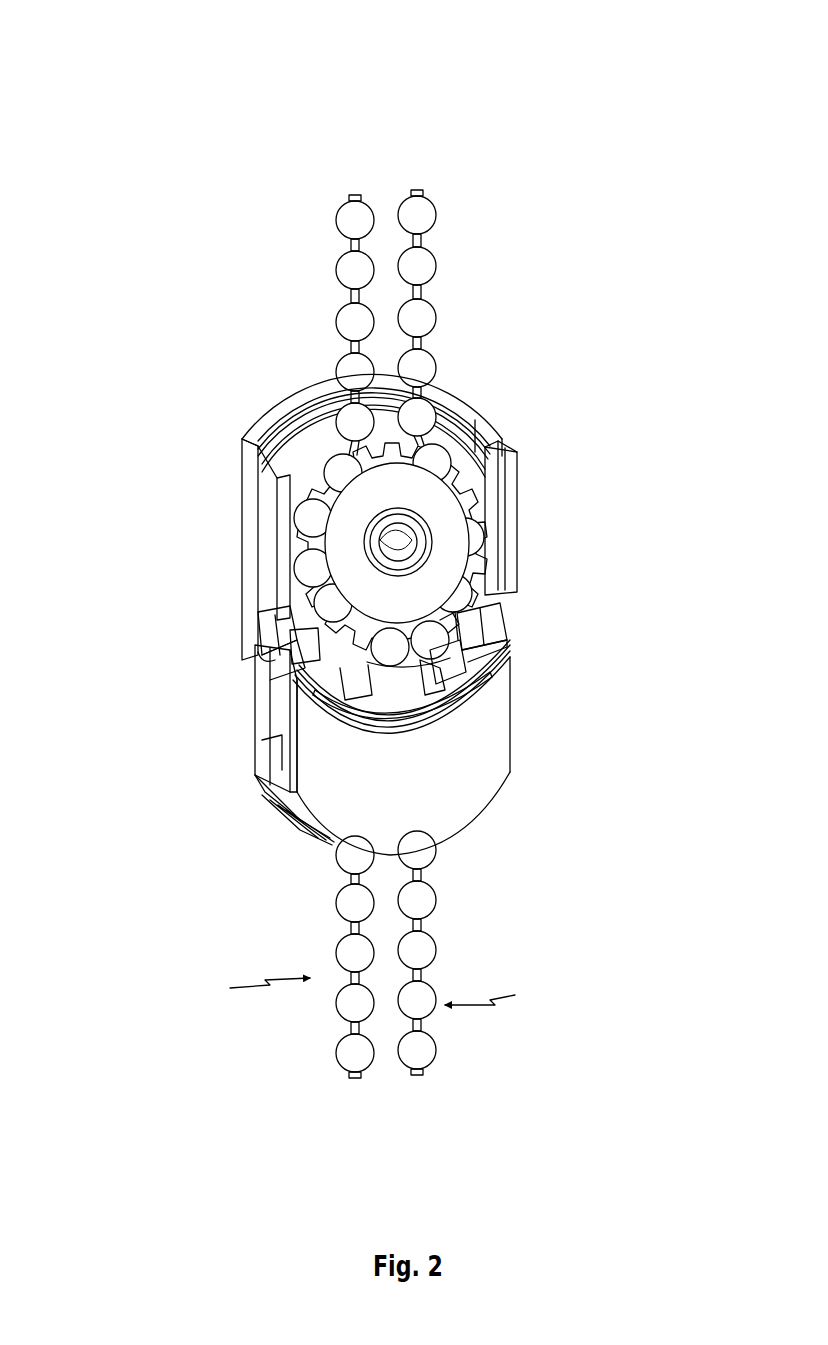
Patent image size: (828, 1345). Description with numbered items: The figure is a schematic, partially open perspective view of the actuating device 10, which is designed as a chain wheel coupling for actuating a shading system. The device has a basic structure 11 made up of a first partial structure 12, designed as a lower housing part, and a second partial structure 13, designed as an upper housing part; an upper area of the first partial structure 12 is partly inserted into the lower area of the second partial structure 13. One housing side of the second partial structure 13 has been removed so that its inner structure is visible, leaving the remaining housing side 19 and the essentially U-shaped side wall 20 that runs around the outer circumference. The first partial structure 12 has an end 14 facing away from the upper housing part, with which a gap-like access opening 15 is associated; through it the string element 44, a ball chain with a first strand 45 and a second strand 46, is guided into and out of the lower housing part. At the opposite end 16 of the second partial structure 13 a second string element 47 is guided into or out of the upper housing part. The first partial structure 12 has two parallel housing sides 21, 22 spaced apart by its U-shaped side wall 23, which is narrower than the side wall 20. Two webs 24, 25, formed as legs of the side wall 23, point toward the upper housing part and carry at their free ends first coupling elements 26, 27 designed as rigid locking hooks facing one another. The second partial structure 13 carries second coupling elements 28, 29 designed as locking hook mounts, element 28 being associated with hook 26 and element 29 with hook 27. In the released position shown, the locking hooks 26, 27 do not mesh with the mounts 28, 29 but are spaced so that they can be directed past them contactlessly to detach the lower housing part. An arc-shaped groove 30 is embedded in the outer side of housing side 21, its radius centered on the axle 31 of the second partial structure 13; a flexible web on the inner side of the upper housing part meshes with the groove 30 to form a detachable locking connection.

The actuating device 10 is at (282, 235).
The basic structure 11 is at (175, 600).
The first partial structure 12 is at (513, 745).
The second partial structure 13 is at (240, 538).
The end 14 is at (388, 1075).
The access opening 15 is at (293, 792).
The end 16 is at (390, 180).
The housing side 19 is at (240, 492).
The side wall 20 is at (242, 437).
The housing side 21 is at (480, 822).
The housing side 22 is at (250, 748).
The side wall 23 is at (262, 790).
The web 24 is at (265, 660).
The web 25 is at (505, 638).
The first coupling element 26 is at (270, 640).
The first coupling element 27 is at (505, 605).
The second coupling element 28 is at (255, 685).
The second coupling element 29 is at (510, 640).
The groove 30 is at (510, 700).
The axle 31 is at (420, 545).
The string element 44 is at (418, 925).
The first strand 45 is at (245, 990).
The second strand 46 is at (503, 995).
The second string element 47 is at (418, 240).